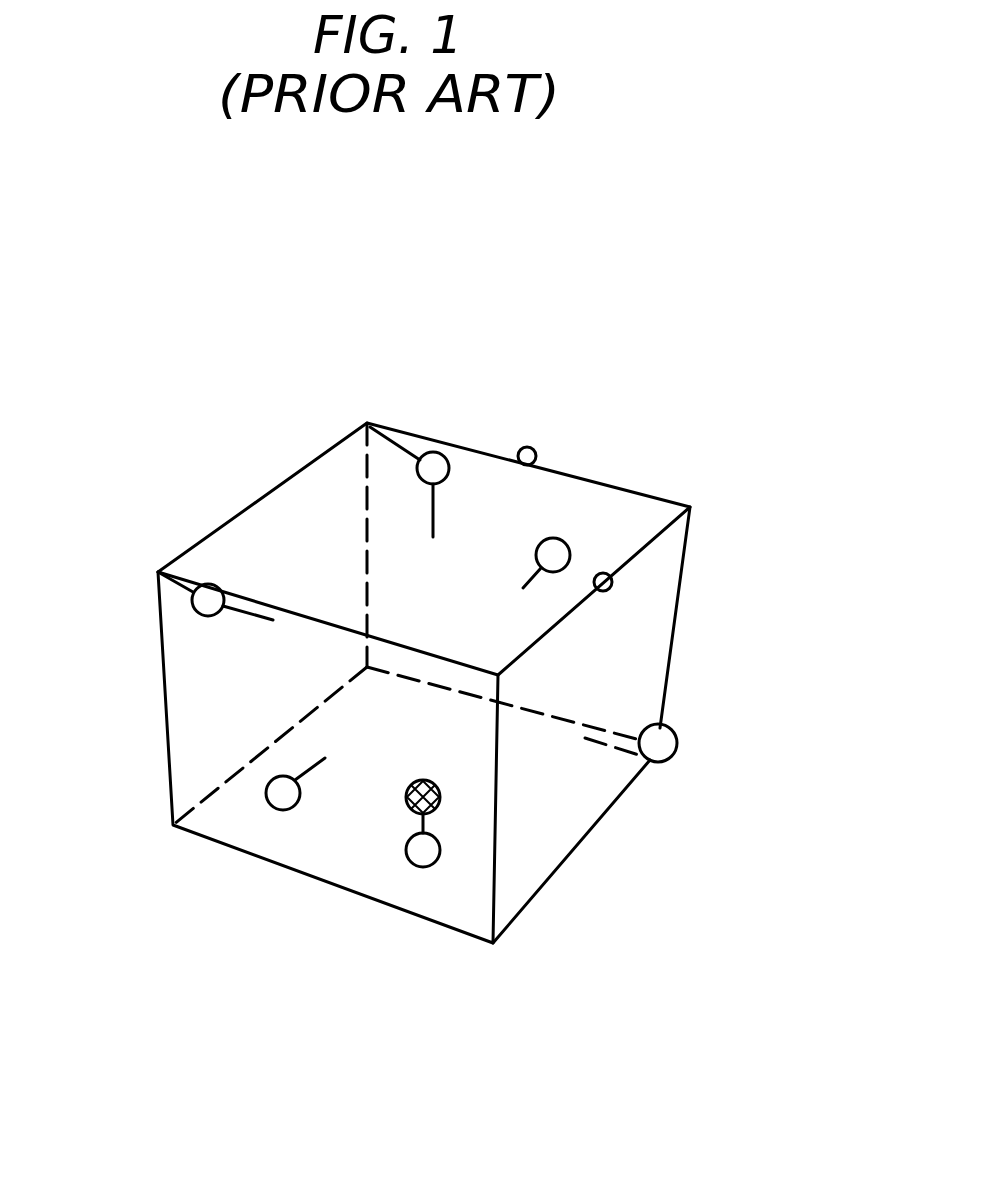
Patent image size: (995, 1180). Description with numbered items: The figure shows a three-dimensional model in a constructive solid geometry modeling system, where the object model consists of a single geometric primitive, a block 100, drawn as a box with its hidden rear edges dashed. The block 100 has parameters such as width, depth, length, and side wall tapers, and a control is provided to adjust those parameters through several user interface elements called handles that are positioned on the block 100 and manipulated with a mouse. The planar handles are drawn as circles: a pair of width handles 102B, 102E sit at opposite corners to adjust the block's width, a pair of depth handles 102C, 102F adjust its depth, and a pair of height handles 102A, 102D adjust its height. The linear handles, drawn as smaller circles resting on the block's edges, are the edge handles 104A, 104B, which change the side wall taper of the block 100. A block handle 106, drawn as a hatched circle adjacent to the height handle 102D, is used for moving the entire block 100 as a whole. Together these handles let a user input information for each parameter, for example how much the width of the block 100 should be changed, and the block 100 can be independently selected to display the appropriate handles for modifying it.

The block 100 is at (693, 423).
The height handle 102A is at (366, 424).
The width handle 102B is at (192, 601).
The depth handle 102C is at (267, 800).
The height handle 102D is at (407, 855).
The width handle 102E is at (678, 748).
The depth handle 102F is at (568, 548).
The edge handle 104A is at (521, 449).
The edge handle 104B is at (612, 582).
The block handle 106 is at (440, 801).